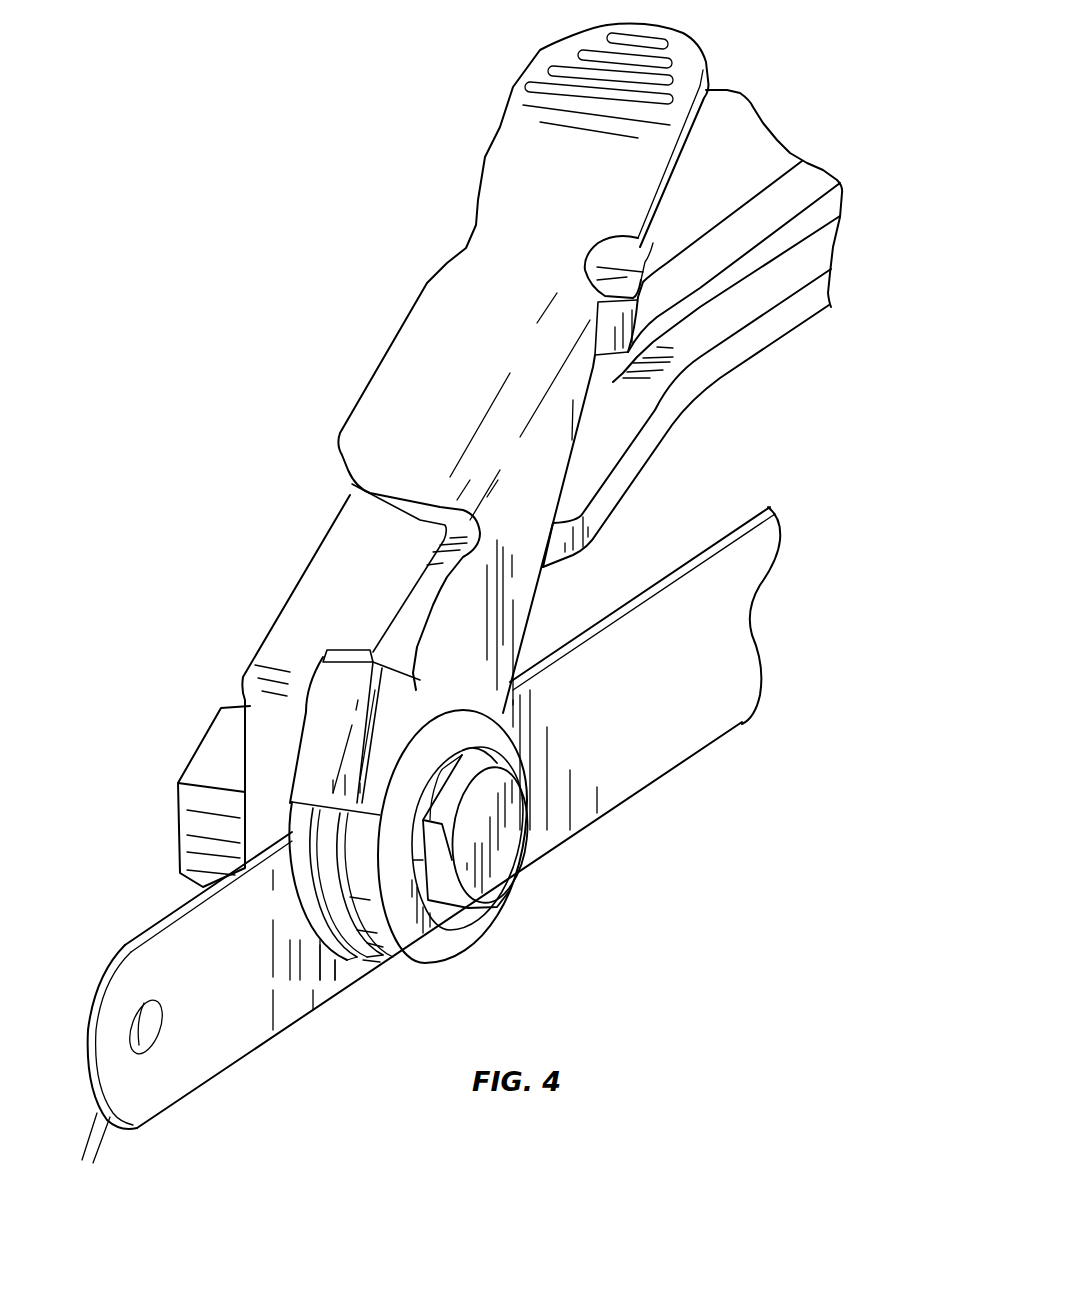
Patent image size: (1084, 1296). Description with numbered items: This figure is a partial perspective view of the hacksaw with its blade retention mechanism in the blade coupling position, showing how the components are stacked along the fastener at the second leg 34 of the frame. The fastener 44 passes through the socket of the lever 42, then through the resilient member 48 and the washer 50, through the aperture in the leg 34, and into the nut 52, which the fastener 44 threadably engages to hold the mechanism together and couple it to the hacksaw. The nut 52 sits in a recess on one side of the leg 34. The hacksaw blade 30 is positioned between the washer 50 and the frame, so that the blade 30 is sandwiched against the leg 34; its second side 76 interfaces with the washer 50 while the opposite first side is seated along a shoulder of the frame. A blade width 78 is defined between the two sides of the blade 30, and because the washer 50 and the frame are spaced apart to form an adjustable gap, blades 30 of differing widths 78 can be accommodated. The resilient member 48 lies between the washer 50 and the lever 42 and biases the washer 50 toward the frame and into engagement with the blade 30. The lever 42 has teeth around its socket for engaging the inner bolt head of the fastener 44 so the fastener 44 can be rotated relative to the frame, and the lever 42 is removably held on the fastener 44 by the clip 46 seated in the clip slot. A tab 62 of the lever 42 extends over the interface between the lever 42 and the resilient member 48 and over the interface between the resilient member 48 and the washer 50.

The blade 30 is at (700, 773).
The second leg 34 is at (617, 428).
The lever 42 is at (512, 182).
The fastener 44 is at (513, 833).
The clip 46 is at (432, 933).
The resilient member 48 is at (337, 933).
The washer 50 is at (317, 940).
The nut 52 is at (220, 757).
The tab 62 is at (340, 693).
The second side 76 is at (730, 587).
The blade width 78 is at (60, 1143).